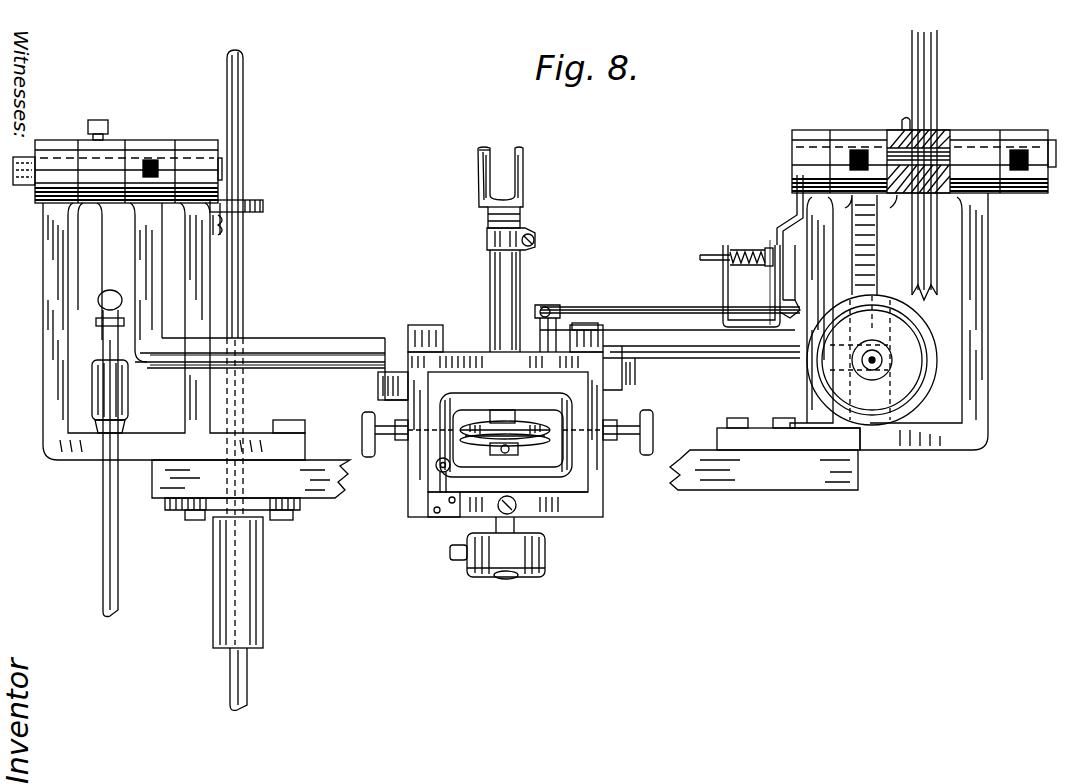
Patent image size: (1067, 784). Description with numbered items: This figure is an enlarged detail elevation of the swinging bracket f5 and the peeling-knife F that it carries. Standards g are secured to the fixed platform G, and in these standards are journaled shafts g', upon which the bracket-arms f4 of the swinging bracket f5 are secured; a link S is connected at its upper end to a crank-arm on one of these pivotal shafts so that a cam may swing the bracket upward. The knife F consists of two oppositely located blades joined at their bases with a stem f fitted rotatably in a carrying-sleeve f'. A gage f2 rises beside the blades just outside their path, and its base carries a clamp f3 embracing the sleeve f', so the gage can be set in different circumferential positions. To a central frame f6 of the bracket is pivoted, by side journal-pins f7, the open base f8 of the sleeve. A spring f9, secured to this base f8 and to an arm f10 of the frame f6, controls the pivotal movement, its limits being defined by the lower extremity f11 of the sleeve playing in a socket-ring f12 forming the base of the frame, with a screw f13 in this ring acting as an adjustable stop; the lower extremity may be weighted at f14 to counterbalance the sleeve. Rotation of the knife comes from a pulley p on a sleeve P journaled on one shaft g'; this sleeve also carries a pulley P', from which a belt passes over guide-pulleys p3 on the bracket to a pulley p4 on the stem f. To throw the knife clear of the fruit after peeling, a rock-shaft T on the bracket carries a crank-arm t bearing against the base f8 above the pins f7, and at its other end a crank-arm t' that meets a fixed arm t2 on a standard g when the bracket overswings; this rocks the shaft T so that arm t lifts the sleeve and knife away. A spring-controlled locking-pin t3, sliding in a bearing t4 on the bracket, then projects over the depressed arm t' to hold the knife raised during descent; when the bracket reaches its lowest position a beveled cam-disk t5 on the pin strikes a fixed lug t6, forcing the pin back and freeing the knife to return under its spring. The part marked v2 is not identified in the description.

The standards g is at (511, 326).
The shafts g' is at (528, 157).
The vertical shaft v2 is at (248, 116).
The link S is at (93, 521).
The bracket-arms f4 is at (141, 248).
The swinging bracket f5 is at (293, 345).
The fixed platform G is at (338, 490).
The peeling-knife F is at (525, 196).
The gage f2 is at (478, 166).
The stem f is at (519, 214).
The clamp f3 is at (537, 241).
The carrying-sleeve f' is at (523, 301).
The crank-arm t is at (506, 328).
The rock-shaft T is at (670, 296).
The central frame f6 is at (600, 478).
The open base f8 is at (506, 424).
The pulley p4 is at (528, 442).
The side journal-pins f7 is at (386, 447).
The spring f9 is at (437, 469).
The arm f10 is at (432, 502).
The screw f13 is at (518, 505).
The lower extremity f11 is at (520, 528).
The socket-ring f12 is at (482, 500).
The weight f14 is at (546, 569).
The pulley p is at (938, 72).
The sleeve P is at (926, 137).
The pulley P' is at (882, 105).
The guide-pulleys p3 is at (920, 341).
The fixed arm t2 is at (796, 184).
The crank-arm t' is at (786, 286).
The locking-pin t3 is at (708, 252).
The bearing t4 is at (728, 283).
The cam-disk t5 is at (752, 248).
The fixed lug t6 is at (770, 246).